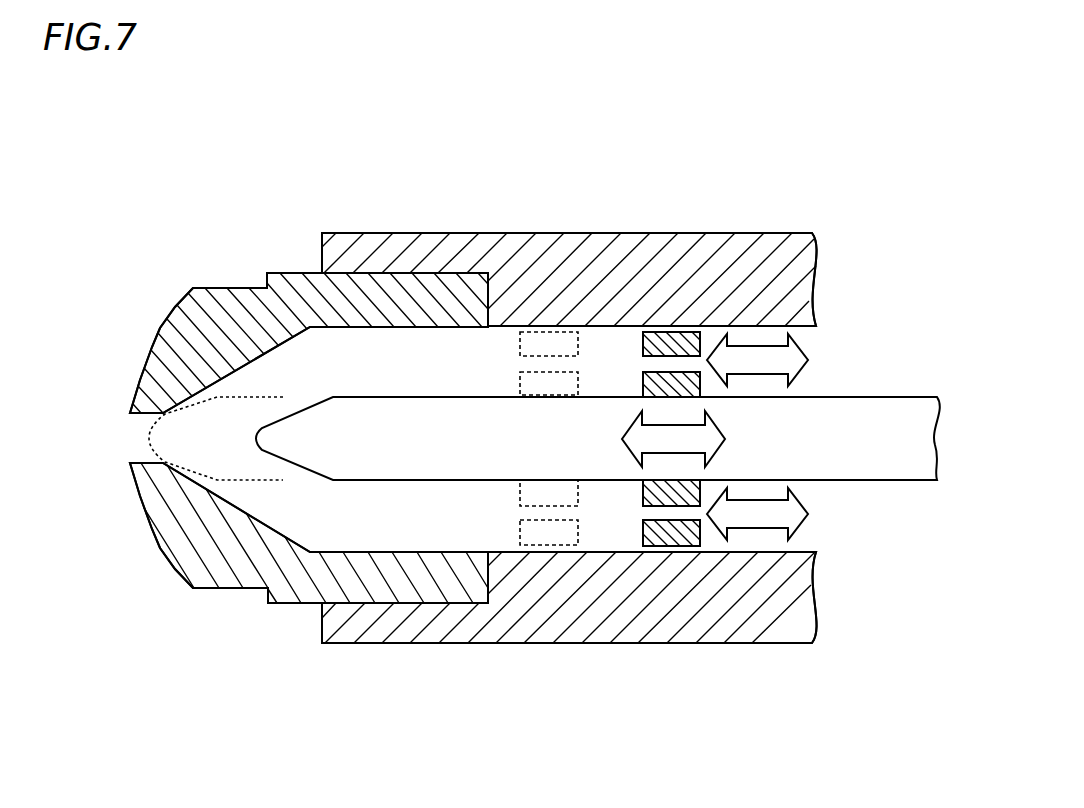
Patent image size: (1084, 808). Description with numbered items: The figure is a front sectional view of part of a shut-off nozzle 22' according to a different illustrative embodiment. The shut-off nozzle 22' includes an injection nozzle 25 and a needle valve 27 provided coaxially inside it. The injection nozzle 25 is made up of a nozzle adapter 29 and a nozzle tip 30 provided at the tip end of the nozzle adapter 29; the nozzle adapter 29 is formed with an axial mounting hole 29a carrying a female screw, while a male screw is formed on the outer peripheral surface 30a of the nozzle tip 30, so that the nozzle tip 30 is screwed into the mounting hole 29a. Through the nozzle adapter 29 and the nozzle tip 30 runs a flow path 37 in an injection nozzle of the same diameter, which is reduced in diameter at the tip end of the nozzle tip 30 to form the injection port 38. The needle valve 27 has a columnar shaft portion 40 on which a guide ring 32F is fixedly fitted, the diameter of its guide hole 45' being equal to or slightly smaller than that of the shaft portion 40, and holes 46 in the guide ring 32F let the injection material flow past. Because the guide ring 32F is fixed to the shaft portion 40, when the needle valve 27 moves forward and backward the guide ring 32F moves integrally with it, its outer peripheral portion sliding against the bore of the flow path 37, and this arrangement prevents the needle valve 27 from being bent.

The shut-off nozzle 22' is at (463, 360).
The injection nozzle 25 is at (112, 252).
The needle valve 27 is at (903, 397).
The nozzle adapter 29 is at (789, 233).
The mounting hole 29a is at (450, 277).
The nozzle tip 30 is at (232, 287).
The outer peripheral surface 30a is at (363, 605).
The guide ring 32F is at (643, 344).
The flow path in an injection nozzle 37 is at (747, 552).
The injection port 38 is at (130, 463).
The shaft portion 40 is at (898, 480).
The guide hole 45' is at (591, 519).
The holes 46 is at (645, 364).